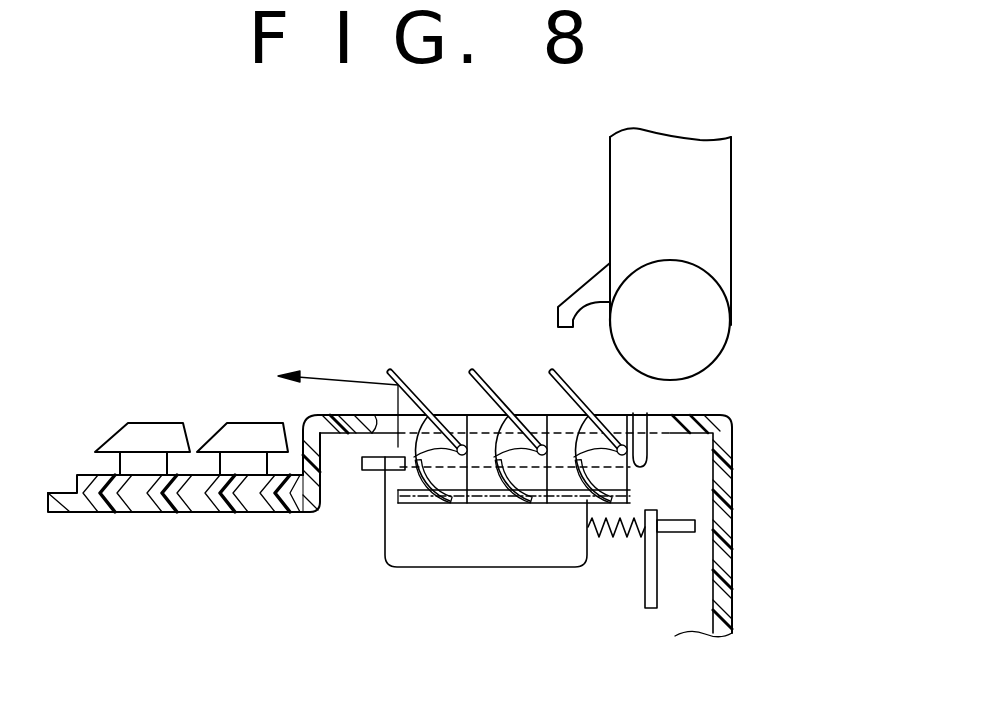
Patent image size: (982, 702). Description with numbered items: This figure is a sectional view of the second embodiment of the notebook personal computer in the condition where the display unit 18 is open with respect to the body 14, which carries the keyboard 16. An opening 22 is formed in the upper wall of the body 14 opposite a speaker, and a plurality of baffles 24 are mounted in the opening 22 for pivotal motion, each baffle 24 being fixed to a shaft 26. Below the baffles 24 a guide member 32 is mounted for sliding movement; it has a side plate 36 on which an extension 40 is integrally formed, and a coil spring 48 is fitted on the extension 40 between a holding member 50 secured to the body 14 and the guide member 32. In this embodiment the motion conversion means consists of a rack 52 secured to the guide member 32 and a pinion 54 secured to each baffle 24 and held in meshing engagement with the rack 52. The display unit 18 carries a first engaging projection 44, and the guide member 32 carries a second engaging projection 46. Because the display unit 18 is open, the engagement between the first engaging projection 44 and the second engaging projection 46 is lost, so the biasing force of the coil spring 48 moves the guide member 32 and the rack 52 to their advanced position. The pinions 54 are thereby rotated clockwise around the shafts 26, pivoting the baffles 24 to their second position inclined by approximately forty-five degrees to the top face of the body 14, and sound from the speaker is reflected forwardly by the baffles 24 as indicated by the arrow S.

The body 14 is at (733, 521).
The keyboard 16 is at (150, 423).
The display unit 18 is at (731, 230).
The opening 22 is at (455, 413).
The baffle 24 is at (404, 372).
The shaft 26 is at (398, 490).
The guide member 32 is at (473, 575).
The side plate 36 is at (423, 565).
The extension 40 is at (668, 532).
The first engaging projection 44 is at (590, 279).
The second engaging projection 46 is at (647, 458).
The coil spring 48 is at (617, 533).
The holding member 50 is at (645, 575).
The rack 52 is at (412, 502).
The pinion 54 is at (450, 478).
The arrow indicating reflected sound S is at (318, 372).